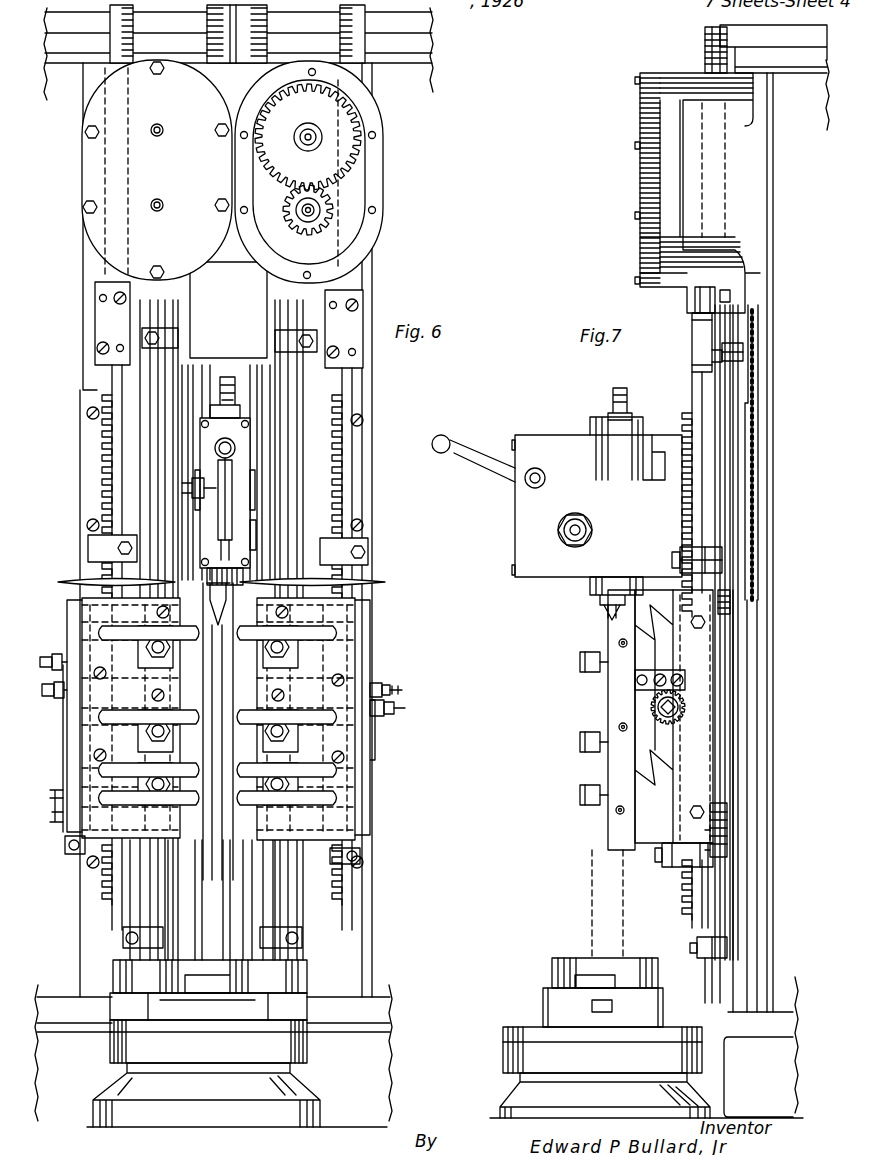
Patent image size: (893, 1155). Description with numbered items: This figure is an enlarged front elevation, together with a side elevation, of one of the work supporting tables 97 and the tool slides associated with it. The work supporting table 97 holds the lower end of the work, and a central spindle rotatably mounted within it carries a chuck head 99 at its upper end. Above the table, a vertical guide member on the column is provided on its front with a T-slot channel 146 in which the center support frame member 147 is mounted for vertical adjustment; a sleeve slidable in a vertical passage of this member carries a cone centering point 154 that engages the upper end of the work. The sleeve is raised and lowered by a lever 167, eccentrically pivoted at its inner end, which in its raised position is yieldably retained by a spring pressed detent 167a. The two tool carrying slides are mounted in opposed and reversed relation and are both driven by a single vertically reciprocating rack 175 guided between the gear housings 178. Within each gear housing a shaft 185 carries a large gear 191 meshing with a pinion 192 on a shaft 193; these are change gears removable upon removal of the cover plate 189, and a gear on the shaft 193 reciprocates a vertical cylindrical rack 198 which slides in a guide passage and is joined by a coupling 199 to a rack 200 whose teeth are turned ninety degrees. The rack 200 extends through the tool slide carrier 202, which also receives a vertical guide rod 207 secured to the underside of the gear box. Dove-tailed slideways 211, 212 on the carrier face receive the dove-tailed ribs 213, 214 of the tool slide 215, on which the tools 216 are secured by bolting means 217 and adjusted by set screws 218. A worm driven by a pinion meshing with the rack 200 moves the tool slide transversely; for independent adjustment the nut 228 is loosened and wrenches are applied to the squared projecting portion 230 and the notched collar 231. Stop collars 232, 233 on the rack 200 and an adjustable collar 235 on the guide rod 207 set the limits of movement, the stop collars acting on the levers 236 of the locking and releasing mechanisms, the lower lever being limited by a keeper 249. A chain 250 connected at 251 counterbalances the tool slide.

In FIG. 6, the work supporting table 97 is at (320, 1112).
In FIG. 7, the work supporting table 97 is at (500, 1107).
In FIG. 6, the chuck head 99 is at (308, 1052).
In FIG. 7, the chuck head 99 is at (520, 1027).
In FIG. 6, the T-slot channel 146 is at (230, 372).
In FIG. 6, the center support frame member 147 is at (212, 440).
In FIG. 7, the center support frame member 147 is at (605, 470).
In FIG. 6, the cone centering point 154 is at (224, 731).
In FIG. 7, the cone centering point 154 is at (605, 618).
In FIG. 7, the lever 167 is at (500, 455).
In FIG. 6, the spring pressed detent 167a is at (205, 490).
In FIG. 6, the vertically reciprocating rack 175 is at (225, 58).
In FIG. 6, the gear housing 178 is at (383, 128).
In FIG. 7, the gear housing 178 is at (665, 186).
In FIG. 6, the shaft 185 is at (318, 142).
In FIG. 6, the cover plate 189 is at (157, 170).
In FIG. 6, the large gear 191 is at (345, 148).
In FIG. 6, the pinion 192 is at (333, 207).
In FIG. 6, the shaft 193 is at (375, 212).
In FIG. 6, the vertical cylindrical rack 198 is at (378, 65).
In FIG. 7, the vertical cylindrical rack 198 is at (705, 285).
In FIG. 6, the coupling 199 is at (350, 322).
In FIG. 7, the coupling 199 is at (702, 346).
In FIG. 6, the rack 200 is at (350, 470).
In FIG. 7, the rack 200 is at (702, 508).
In FIG. 7, the tool slide carrier 202 is at (640, 760).
In FIG. 6, the vertical guide rod 207 is at (285, 378).
In FIG. 7, the vertical guide rod 207 is at (728, 398).
In FIG. 6, the dove-tailed slideway 211 is at (463, 607).
In FIG. 6, the dove-tailed slideway 212 is at (363, 782).
In FIG. 7, the dove-tailed rib 213 is at (660, 645).
In FIG. 7, the dove-tailed rib 214 is at (655, 790).
In FIG. 6, the tool slide 215 is at (345, 745).
In FIG. 7, the tool slide 215 is at (615, 830).
In FIG. 6, the tool 216 is at (254, 635).
In FIG. 6, the bolting means 217 is at (290, 650).
In FIG. 7, the bolting means 217 is at (590, 668).
In FIG. 6, the set screw 218 is at (370, 637).
In FIG. 6, the nut 228 is at (400, 692).
In FIG. 7, the nut 228 is at (655, 712).
In FIG. 6, the squared projecting portion 230 is at (398, 710).
In FIG. 7, the squared projecting portion 230 is at (655, 703).
In FIG. 6, the notched collar 231 is at (380, 712).
In FIG. 7, the notched collar 231 is at (662, 718).
In FIG. 6, the stop collar 232 is at (340, 552).
In FIG. 7, the stop collar 232 is at (690, 558).
In FIG. 6, the stop collar 233 is at (352, 854).
In FIG. 7, the stop collar 233 is at (695, 845).
In FIG. 6, the adjustable collar 235 is at (282, 938).
In FIG. 7, the adjustable collar 235 is at (730, 948).
In FIG. 6, the lever 236 is at (348, 583).
In FIG. 7, the lever 236 is at (728, 606).
In FIG. 7, the keeper 249 is at (693, 870).
In FIG. 7, the chain 250 is at (752, 378).
In FIG. 7, the chain connection 251 is at (752, 578).